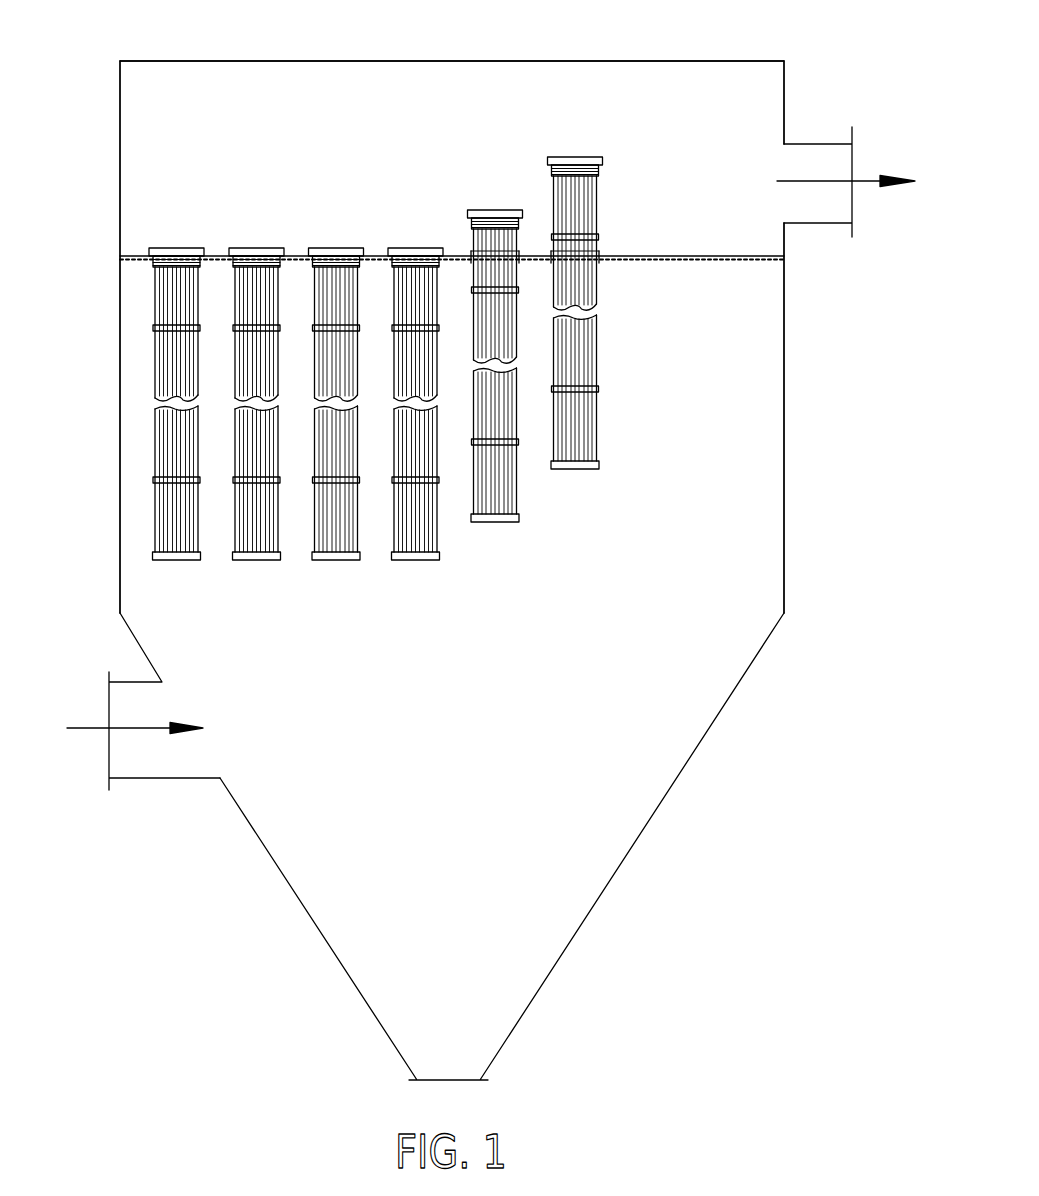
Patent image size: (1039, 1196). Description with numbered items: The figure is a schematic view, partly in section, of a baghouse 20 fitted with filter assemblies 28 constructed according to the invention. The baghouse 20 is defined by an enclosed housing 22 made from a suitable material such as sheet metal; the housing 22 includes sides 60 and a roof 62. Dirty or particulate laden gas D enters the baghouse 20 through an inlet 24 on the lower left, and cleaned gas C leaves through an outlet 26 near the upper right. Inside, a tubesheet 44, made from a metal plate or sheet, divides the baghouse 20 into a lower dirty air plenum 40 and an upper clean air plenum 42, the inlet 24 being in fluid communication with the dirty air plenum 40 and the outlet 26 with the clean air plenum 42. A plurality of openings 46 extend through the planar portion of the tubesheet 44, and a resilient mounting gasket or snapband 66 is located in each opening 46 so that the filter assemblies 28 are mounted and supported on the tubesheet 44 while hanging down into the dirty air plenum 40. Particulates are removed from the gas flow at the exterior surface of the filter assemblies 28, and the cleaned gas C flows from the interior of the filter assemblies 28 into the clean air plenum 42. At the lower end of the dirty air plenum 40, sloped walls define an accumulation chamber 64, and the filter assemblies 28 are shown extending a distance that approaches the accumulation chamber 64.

The baghouse 20 is at (777, 703).
The housing 22 is at (791, 621).
The inlet 24 is at (183, 779).
The outlet 26 is at (800, 223).
The filter assembly 28 is at (560, 157).
The dirty air plenum 40 is at (652, 523).
The clean air plenum 42 is at (400, 136).
The tubesheet 44 is at (694, 253).
The openings 46 is at (642, 260).
The sides 60 is at (120, 501).
The roof 62 is at (361, 61).
The accumulation chamber 64 is at (446, 831).
The snapband 66 is at (524, 255).
The cleaned gas C is at (858, 178).
The particulate laden gas D is at (68, 728).